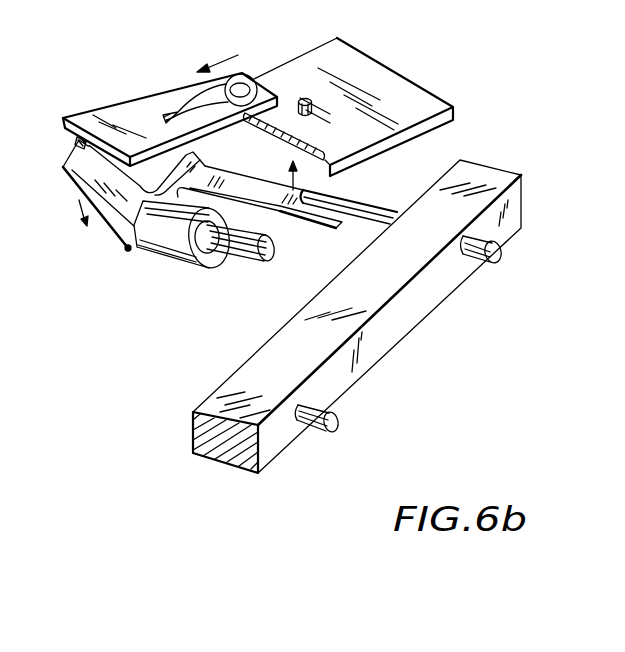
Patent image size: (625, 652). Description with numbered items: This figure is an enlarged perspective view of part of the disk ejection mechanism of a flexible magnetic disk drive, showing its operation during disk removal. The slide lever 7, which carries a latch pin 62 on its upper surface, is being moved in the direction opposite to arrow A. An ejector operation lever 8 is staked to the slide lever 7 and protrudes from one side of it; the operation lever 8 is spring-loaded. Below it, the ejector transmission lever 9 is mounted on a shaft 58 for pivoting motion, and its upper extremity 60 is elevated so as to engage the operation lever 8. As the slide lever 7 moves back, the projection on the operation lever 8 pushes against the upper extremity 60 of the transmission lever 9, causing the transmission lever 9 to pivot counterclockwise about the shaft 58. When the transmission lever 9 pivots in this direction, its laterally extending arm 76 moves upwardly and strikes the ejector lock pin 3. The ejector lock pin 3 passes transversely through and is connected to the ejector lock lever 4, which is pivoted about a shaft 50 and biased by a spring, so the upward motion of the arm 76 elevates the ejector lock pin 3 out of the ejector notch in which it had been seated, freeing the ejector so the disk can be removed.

The ejector lock pin 3 is at (495, 262).
The ejector lock lever 4 is at (387, 343).
The slide lever 7 is at (408, 94).
The ejector operation lever 8 is at (108, 121).
The ejector transmission lever 9 is at (130, 250).
The shaft 50 is at (337, 424).
The shaft 58 is at (274, 248).
The upper extremity of the ejector transmission lever 60 is at (75, 142).
The latch pin 62 is at (313, 108).
The laterally extending arm 76 is at (256, 187).